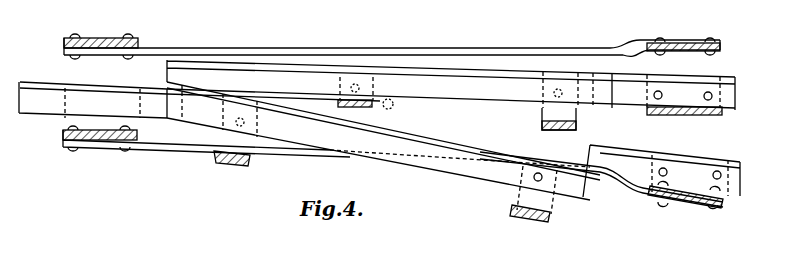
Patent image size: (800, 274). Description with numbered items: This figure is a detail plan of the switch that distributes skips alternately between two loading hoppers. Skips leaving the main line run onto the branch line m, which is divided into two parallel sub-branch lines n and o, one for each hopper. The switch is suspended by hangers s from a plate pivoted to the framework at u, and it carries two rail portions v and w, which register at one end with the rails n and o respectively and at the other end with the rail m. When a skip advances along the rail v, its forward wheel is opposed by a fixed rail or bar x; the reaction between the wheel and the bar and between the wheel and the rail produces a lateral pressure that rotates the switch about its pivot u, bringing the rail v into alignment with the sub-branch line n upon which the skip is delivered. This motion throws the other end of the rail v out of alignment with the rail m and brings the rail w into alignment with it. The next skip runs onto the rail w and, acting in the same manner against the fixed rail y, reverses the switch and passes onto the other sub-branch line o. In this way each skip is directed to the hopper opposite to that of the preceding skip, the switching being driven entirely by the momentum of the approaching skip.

The branch line m is at (40, 92).
The sub-branch line o is at (723, 92).
The sub-branch line n is at (718, 160).
The fixed rail y is at (577, 57).
The switch rail portion w is at (487, 73).
The switch rail portion v is at (387, 132).
The fixed rail or bar x is at (380, 153).
The pivot u is at (392, 102).
The hangers s is at (573, 127).